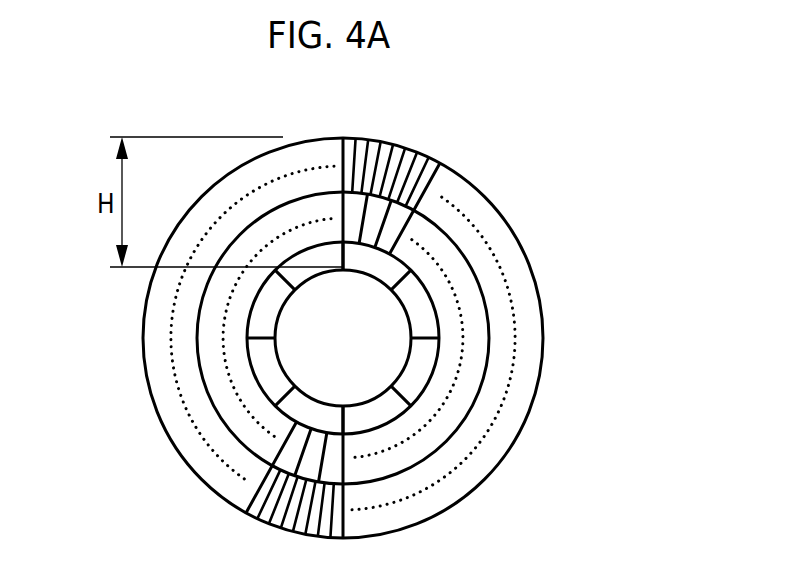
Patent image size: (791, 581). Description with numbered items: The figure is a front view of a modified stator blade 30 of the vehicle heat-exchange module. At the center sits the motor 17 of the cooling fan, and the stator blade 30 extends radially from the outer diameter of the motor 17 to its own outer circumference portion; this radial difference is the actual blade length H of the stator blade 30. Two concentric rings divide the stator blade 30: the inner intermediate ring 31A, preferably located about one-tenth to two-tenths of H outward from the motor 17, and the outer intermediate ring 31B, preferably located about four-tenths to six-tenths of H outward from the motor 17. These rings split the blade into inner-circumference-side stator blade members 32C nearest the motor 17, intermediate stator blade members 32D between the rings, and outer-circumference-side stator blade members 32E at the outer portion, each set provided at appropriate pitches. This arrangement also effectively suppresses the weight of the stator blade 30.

The stator blade 30 is at (142, 335).
The inner intermediate ring 31A is at (390, 430).
The outer intermediate ring 31B is at (470, 407).
The inner-circumference-side stator blade members 32C is at (407, 287).
The intermediate stator blade members 32D is at (410, 227).
The outer-circumference-side stator blade members 32E is at (436, 165).
The motor 17 is at (252, 382).